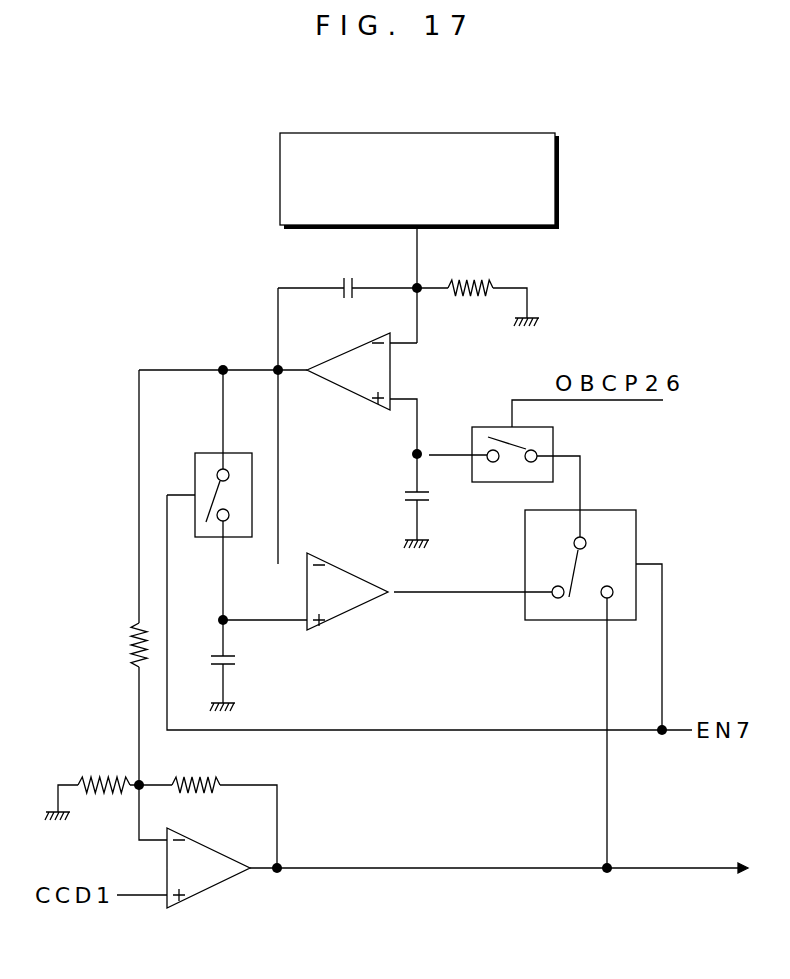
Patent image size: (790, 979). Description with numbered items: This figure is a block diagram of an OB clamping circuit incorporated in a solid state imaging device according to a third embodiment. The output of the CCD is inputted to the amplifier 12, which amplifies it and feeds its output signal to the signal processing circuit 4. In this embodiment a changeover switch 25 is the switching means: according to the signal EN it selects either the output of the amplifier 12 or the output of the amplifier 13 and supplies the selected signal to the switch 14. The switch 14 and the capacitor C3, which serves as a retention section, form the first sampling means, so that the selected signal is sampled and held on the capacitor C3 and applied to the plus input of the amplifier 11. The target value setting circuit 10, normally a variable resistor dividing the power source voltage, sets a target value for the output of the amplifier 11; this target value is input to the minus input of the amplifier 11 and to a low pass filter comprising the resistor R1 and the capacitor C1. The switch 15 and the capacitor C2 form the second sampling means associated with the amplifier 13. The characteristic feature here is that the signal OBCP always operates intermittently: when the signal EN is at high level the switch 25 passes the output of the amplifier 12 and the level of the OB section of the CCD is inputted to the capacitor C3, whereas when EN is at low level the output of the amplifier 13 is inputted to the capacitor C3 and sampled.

The target value setting circuit 10 is at (559, 141).
The amplifier 11 is at (338, 387).
The amplifier 12 is at (203, 890).
The amplifier 13 is at (345, 615).
The switch 14 is at (553, 437).
The switch 15 is at (208, 452).
The switch 25 is at (636, 520).
The signal processing circuit 4 is at (666, 913).
The capacitor C1 is at (349, 271).
The capacitor C2 is at (247, 661).
The capacitor C3 is at (392, 496).
The resistor R1 is at (487, 281).